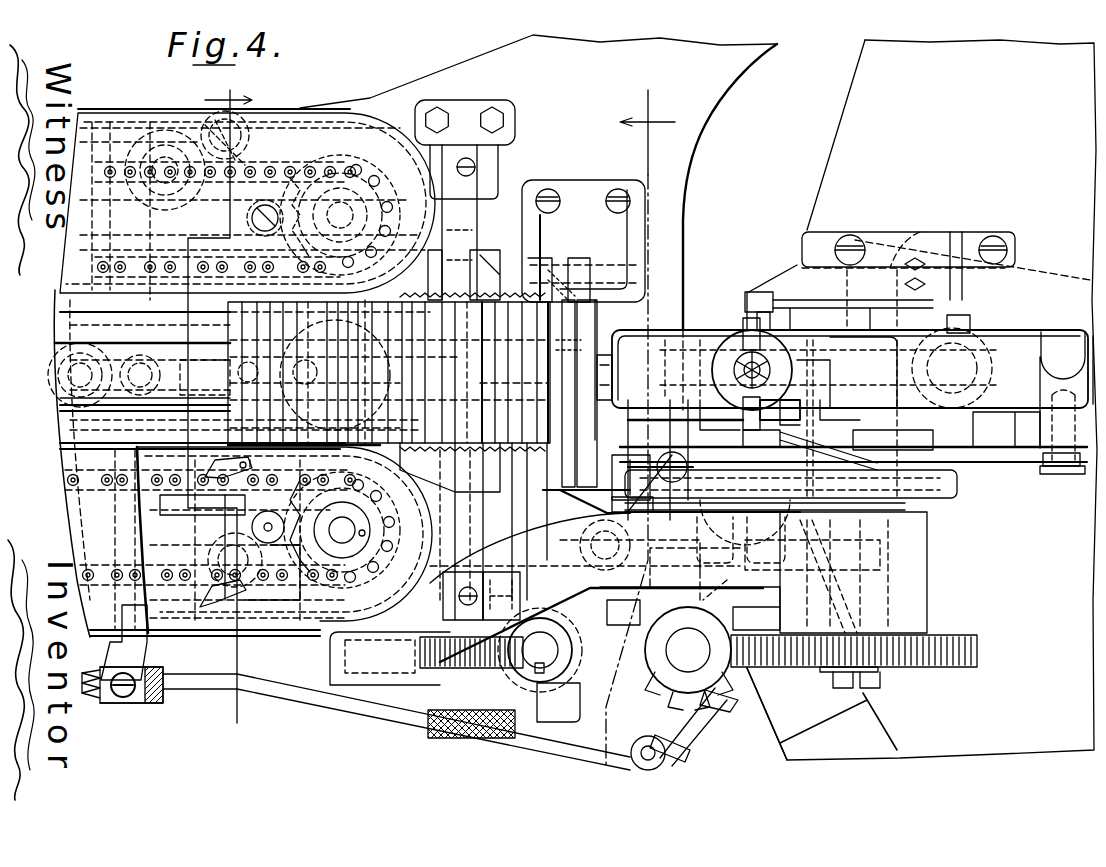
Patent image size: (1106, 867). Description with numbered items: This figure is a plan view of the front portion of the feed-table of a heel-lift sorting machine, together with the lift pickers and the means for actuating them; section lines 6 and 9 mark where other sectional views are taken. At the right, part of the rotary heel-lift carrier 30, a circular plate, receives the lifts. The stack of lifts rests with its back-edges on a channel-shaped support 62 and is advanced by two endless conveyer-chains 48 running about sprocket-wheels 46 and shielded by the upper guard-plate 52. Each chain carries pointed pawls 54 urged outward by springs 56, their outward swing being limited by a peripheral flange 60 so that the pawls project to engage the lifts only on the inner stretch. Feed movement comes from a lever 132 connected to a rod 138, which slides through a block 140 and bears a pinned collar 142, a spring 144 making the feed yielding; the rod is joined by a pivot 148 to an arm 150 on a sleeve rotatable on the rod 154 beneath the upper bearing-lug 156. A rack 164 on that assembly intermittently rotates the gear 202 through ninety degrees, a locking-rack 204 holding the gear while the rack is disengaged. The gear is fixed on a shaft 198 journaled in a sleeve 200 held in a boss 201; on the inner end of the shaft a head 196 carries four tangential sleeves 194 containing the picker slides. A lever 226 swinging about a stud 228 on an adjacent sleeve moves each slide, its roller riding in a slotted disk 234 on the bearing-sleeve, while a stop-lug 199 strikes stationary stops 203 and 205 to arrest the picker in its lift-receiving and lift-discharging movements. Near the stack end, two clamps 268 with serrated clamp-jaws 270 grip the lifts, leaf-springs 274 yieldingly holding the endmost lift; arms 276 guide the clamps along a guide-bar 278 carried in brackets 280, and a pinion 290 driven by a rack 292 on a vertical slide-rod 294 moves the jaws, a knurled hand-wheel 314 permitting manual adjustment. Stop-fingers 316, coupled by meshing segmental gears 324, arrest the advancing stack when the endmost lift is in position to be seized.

The section line 6— 6 is at (220, 412).
The section line 9— 9 is at (636, 427).
The rotary heel-lift carrier 30 is at (957, 733).
The sprocket-wheel 46 is at (305, 190).
The conveyer-chain 48 is at (103, 172).
The upper guard-plate 52 is at (262, 122).
The pointed pawl 54 is at (230, 463).
The spring 56 is at (213, 470).
The peripheral flange 60 is at (152, 453).
The channel-shaped support 62 is at (55, 342).
The lever 132 is at (216, 615).
The rod 138 is at (332, 707).
The block 140 is at (100, 703).
The collar 142 is at (160, 706).
The spring 144 is at (88, 703).
The pivot 148 is at (652, 766).
The arm 150 is at (668, 752).
The rod 154 is at (690, 645).
The upper bearing-lug 156 is at (665, 727).
The rack 164 is at (740, 667).
The sleeve 194 is at (700, 342).
The head 196 is at (907, 371).
The shaft 198 is at (883, 558).
The stop-lug 199 is at (813, 320).
The sleeve 200 is at (907, 503).
The boss 201 is at (927, 592).
The gear 202 is at (977, 648).
The stationary stop 203 is at (782, 305).
The locking-rack 204 is at (712, 700).
The stationary stop 205 is at (970, 323).
The lever 226 is at (973, 455).
The stud 228 is at (1053, 468).
The disk 234 is at (957, 483).
The clamp 268 is at (528, 236).
The clamp-jaw 270 is at (515, 265).
The leaf-spring 274 is at (550, 283).
The arm 276 is at (483, 257).
The guide-bar 278 is at (465, 182).
The bracket 280 is at (495, 155).
The pinion 290 is at (460, 668).
The rack 292 is at (533, 667).
The slide-rod 294 is at (570, 667).
The knurled hand-wheel 314 is at (483, 737).
The stop-finger 316 is at (570, 447).
The segmental gear 324 is at (597, 388).